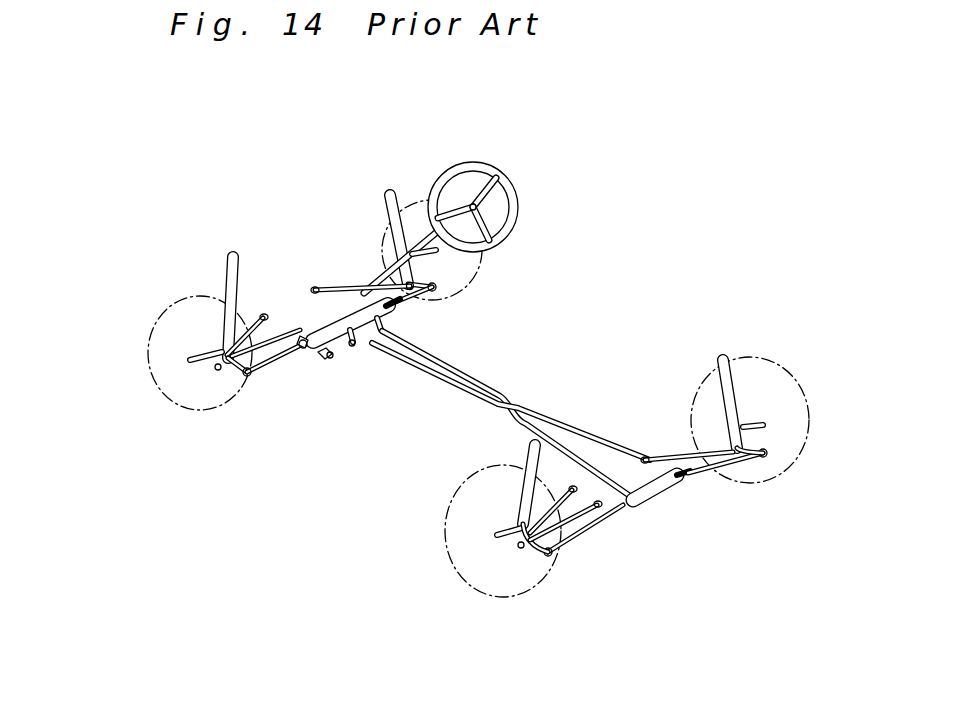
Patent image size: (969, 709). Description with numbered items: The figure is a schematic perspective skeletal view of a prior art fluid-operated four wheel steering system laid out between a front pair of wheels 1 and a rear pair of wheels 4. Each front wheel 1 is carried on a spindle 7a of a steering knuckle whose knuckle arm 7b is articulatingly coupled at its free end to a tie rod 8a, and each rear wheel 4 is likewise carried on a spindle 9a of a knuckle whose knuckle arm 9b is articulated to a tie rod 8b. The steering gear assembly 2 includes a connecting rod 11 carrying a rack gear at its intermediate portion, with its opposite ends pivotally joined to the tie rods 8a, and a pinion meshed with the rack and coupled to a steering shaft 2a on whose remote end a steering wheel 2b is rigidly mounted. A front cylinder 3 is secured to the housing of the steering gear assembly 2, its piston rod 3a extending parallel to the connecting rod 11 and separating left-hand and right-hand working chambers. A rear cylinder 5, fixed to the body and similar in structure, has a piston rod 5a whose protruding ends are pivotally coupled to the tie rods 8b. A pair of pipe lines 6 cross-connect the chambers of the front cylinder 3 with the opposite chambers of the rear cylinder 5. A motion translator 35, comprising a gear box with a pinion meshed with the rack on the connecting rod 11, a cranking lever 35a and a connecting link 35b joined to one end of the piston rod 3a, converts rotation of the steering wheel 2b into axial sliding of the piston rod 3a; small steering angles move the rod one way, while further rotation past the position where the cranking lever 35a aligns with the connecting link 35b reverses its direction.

The front wheel 1 is at (490, 268).
The steering gear assembly 2 is at (310, 325).
The steering shaft 2a is at (383, 247).
The steering wheel 2b is at (508, 190).
The front cylinder 3 is at (353, 348).
The piston rod 3a is at (393, 326).
The rear wheel 4 is at (808, 423).
The rear cylinder 5 is at (648, 500).
The piston rod 5a is at (688, 485).
The pipe lines 6 is at (500, 396).
The spindle 7a is at (436, 254).
The knuckle arm 7b is at (440, 272).
The tie rod 8a is at (397, 307).
The tie rod 8b is at (715, 470).
The spindle 9a is at (760, 420).
The knuckle arm 9b is at (762, 447).
The connecting rod 11 is at (303, 337).
The motion translator 35 is at (316, 369).
The cranking lever 35a is at (321, 364).
The connecting link 35b is at (343, 358).